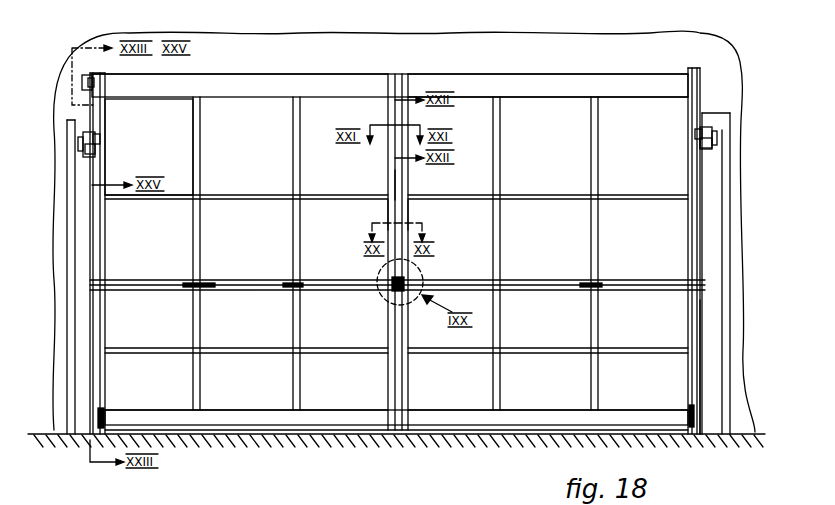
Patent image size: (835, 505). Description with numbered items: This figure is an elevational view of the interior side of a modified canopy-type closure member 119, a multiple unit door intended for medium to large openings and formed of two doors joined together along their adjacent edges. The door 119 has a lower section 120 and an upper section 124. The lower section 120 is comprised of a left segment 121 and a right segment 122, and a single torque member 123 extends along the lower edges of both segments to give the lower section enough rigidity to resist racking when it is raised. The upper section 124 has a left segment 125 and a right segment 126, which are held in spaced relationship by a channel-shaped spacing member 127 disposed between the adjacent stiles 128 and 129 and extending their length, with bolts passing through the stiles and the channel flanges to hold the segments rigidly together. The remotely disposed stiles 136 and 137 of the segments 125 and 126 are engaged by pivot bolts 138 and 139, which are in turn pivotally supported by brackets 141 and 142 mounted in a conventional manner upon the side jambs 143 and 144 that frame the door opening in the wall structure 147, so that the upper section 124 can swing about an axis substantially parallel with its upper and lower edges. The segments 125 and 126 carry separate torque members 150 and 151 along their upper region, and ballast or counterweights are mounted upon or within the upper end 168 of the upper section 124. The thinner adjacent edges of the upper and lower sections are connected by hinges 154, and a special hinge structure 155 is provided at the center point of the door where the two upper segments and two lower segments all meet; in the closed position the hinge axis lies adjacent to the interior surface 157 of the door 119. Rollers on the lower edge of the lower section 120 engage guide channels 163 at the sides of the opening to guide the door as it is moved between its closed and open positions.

The multiple unit closure member 119 is at (655, 62).
The lower section 120 is at (447, 433).
The left segment 121 is at (275, 400).
The right segment 122 is at (540, 398).
The torque member 123 is at (370, 415).
The upper section 124 is at (482, 67).
The left segment 125 is at (280, 90).
The right segment 126 is at (555, 102).
The channel-shaped spacing member 127 is at (398, 187).
The stile 128 is at (392, 212).
The stile 129 is at (408, 212).
The remotely disposed stile 136 is at (103, 218).
The remotely disposed stile 137 is at (692, 160).
The pivot bolt 138 is at (96, 133).
The pivot bolt 139 is at (698, 130).
The bracket 141 is at (88, 150).
The bracket 142 is at (702, 147).
The side jamb 143 is at (80, 248).
The side jamb 144 is at (715, 222).
The wall structure 147 is at (375, 33).
The torque member 150 is at (190, 79).
The torque member 151 is at (553, 72).
The hinges 154 is at (195, 285).
The special hinge structure 155 is at (406, 280).
The interior surface 157 is at (272, 150).
The guide channel 163 is at (702, 368).
The upper end 168 is at (355, 77).